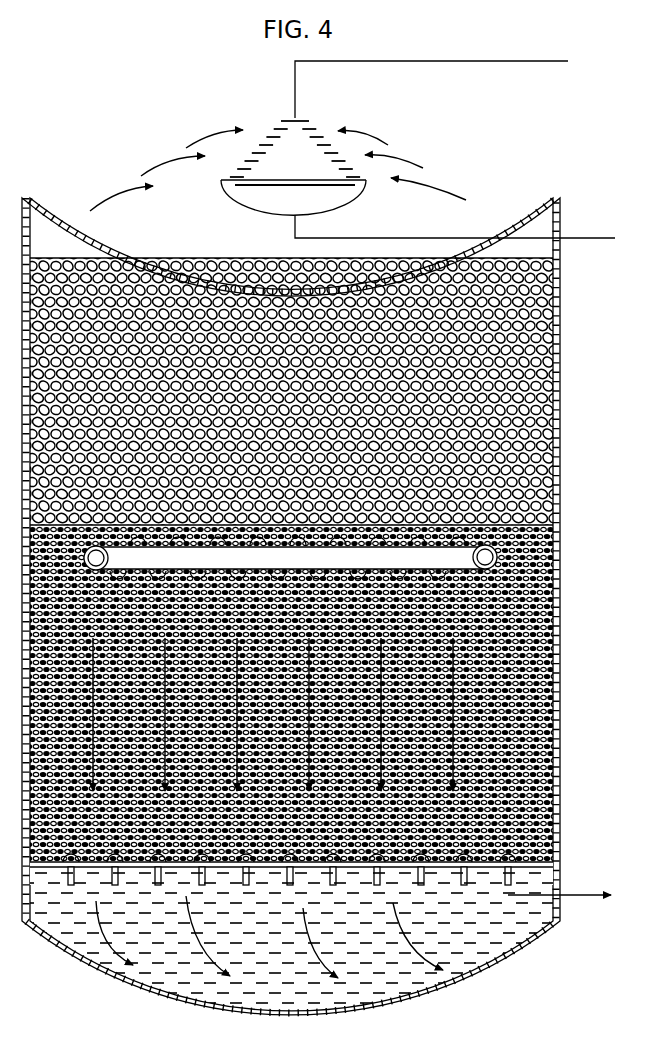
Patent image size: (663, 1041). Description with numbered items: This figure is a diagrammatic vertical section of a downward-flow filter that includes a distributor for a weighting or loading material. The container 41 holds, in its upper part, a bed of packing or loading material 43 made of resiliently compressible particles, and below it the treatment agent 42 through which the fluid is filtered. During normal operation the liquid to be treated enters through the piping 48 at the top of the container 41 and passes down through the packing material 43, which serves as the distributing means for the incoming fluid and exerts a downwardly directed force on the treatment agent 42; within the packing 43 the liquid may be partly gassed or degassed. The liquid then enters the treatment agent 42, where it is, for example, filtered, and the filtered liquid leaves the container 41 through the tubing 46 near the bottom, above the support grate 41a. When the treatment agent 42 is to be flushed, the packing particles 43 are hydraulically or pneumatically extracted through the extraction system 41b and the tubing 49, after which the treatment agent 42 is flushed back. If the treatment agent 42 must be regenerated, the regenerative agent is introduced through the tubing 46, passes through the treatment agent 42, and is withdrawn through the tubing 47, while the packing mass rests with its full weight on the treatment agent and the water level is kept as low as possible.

The container 41 is at (551, 773).
The grate / support grid 41a is at (500, 845).
The extraction system 41b is at (277, 137).
The treatment agent 42 is at (515, 662).
The packing or loading material 43 is at (548, 430).
The tubing 46 is at (577, 893).
The tubing 47 is at (533, 548).
The piping 48 is at (582, 230).
The tubing 49 is at (506, 55).